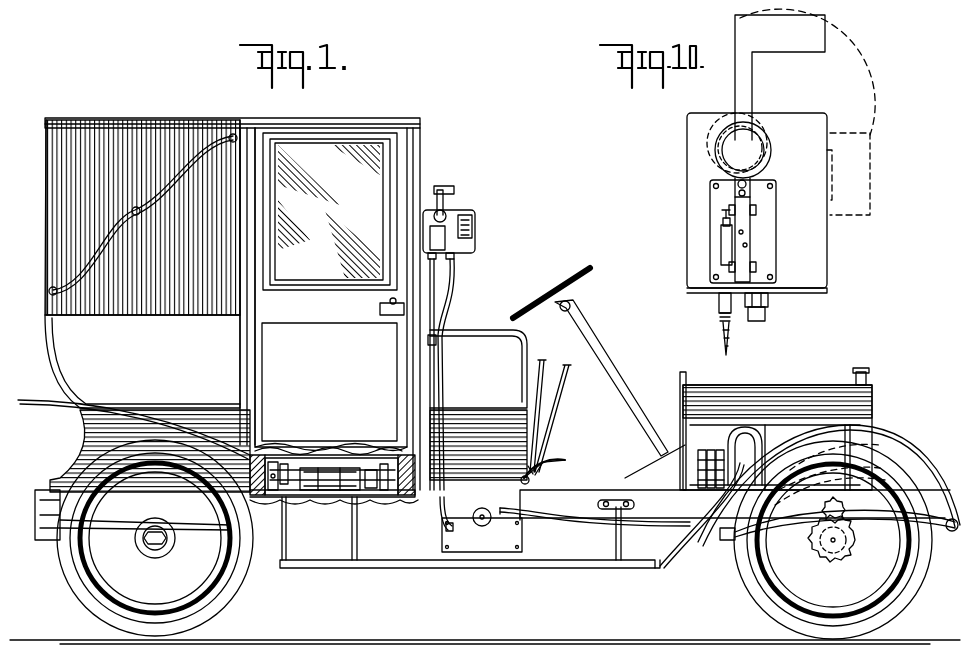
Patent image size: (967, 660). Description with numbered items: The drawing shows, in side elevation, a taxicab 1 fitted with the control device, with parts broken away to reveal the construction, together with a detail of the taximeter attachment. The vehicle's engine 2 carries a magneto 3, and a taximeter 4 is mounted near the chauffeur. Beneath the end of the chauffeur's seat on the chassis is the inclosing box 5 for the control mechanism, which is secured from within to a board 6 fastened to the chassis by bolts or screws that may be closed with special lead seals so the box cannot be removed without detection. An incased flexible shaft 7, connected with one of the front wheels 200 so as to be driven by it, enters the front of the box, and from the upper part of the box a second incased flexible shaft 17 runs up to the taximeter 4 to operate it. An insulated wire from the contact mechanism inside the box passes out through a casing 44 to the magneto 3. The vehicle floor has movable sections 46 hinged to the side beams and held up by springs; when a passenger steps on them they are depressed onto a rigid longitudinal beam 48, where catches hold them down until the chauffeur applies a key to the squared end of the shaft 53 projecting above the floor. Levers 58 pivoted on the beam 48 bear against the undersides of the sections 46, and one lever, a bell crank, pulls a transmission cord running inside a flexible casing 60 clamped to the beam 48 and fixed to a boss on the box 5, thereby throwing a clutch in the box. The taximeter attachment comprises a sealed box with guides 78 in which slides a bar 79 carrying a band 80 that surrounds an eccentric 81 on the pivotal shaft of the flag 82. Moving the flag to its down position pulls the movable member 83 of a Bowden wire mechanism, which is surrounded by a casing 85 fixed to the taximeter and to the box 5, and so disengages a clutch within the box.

In FIG. 1, the taxicab 1 is at (67, 347).
In FIG. 1, the engine 2 is at (748, 425).
In FIG. 1, the magneto 3 is at (708, 448).
In FIG. 1, the taximeter 4 is at (470, 228).
In FIG. 10, the taximeter 4 is at (822, 246).
In FIG. 1, the inclosing box 5 is at (488, 552).
In FIG. 1, the board 6 is at (552, 470).
In FIG. 1, the incased flexible shaft 7 is at (710, 545).
In FIG. 1, the incased flexible shaft 17 is at (444, 298).
In FIG. 10, the incased flexible shaft 17 is at (768, 316).
In FIG. 1, the casing 44 is at (577, 526).
In FIG. 1, the movable floor sections 46 is at (328, 466).
In FIG. 1, the rigid longitudinal beam 48 is at (330, 488).
In FIG. 1, the shaft 53 is at (386, 468).
In FIG. 1, the levers 58 is at (296, 472).
In FIG. 1, the flexible casing 60 is at (440, 526).
In FIG. 10, the guides 78 is at (787, 267).
In FIG. 10, the bar 79 is at (750, 228).
In FIG. 10, the band 80 is at (770, 158).
In FIG. 10, the eccentric 81 is at (728, 157).
In FIG. 1, the flag 82 is at (443, 204).
In FIG. 10, the flag 82 is at (750, 100).
In FIG. 10, the movable member 83 is at (722, 342).
In FIG. 1, the casing 85 is at (452, 362).
In FIG. 10, the casing 85 is at (718, 311).
In FIG. 1, the front wheels 200 is at (816, 606).